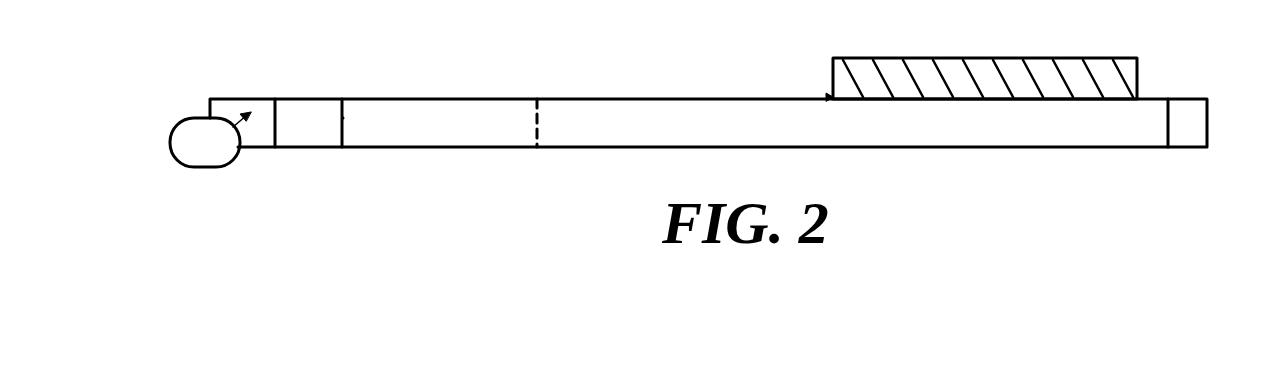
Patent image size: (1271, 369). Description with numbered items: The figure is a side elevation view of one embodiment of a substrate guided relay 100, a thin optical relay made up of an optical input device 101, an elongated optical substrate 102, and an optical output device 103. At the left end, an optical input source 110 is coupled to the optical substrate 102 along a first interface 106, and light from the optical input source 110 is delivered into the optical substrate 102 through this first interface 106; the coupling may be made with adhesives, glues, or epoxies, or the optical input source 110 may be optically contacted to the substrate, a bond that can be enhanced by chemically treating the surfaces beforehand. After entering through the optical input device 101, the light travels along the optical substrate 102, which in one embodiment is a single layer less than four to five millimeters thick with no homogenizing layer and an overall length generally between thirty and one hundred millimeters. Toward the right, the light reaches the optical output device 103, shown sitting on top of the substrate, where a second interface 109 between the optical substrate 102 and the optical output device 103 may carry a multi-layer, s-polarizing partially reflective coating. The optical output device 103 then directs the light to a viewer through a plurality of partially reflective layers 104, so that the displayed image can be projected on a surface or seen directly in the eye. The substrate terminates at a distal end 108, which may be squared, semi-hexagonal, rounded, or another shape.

The substrate guided relay 100 is at (199, 98).
The optical input device 101 is at (293, 118).
The optical substrate 102 is at (688, 122).
The optical output device 103 is at (882, 57).
The partially reflective layers 104 is at (948, 72).
The first interface 106 is at (343, 118).
The distal end 108 is at (1208, 112).
The second interface 109 is at (827, 97).
The optical input source 110 is at (210, 143).